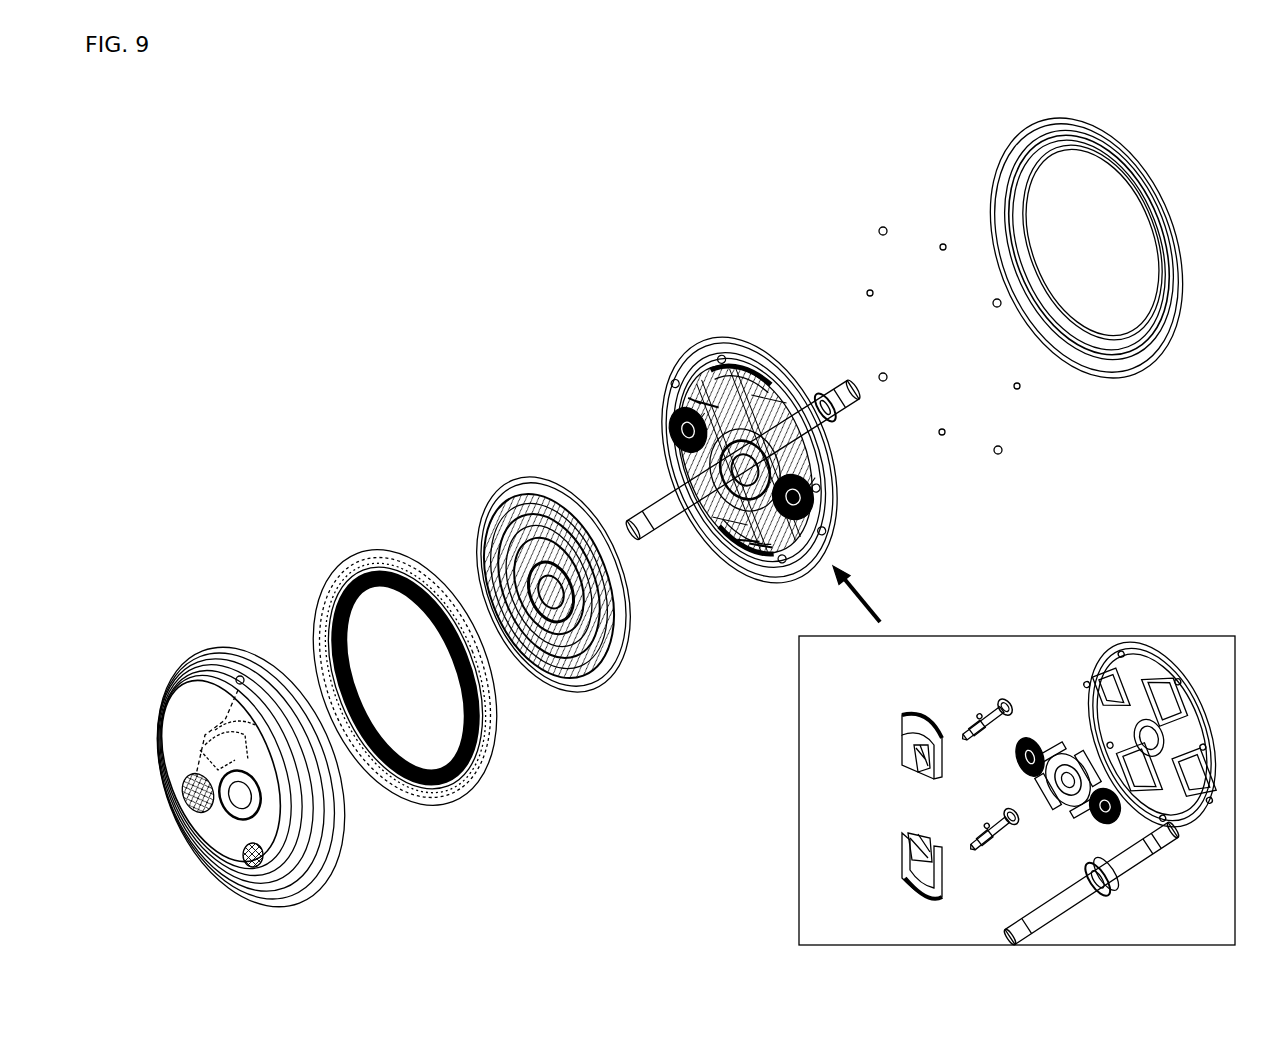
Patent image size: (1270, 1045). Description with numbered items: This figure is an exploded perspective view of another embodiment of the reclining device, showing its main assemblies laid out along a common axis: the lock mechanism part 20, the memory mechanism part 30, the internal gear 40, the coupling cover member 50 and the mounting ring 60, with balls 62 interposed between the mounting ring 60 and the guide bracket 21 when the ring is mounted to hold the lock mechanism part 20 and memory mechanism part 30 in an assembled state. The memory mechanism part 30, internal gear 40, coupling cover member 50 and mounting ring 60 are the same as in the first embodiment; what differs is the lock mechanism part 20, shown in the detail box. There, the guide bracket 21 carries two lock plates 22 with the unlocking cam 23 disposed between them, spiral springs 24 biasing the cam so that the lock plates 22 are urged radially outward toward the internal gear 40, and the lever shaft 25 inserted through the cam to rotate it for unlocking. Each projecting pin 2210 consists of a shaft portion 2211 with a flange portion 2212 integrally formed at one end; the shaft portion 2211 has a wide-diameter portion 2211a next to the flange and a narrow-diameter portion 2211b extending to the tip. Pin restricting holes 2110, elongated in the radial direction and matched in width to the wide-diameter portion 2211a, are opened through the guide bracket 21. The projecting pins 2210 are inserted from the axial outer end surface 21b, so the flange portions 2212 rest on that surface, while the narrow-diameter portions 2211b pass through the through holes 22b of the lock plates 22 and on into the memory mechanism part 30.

The lock mechanism part 20 is at (690, 340).
The guide bracket 21 is at (941, 601).
The axial outer end surface 21b is at (840, 510).
The lock plate 22 is at (801, 604).
The through hole 22b is at (898, 812).
The unlocking cam 23 is at (1057, 826).
The spiral spring 24 is at (665, 421).
The lever shaft 25 is at (1152, 865).
The memory mechanism part 30 is at (640, 690).
The internal gear 40 is at (498, 788).
The coupling cover member 50 is at (345, 885).
The mounting ring 60 is at (1170, 340).
The ball 62 is at (993, 444).
The pin restricting hole 2110 is at (1150, 690).
The projecting pin 2210 is at (817, 651).
The shaft portion 2211 is at (969, 766).
The wide-diameter portion 2211a is at (990, 712).
The narrow-diameter portion 2211b is at (977, 728).
The flange portion 2212 is at (1015, 705).